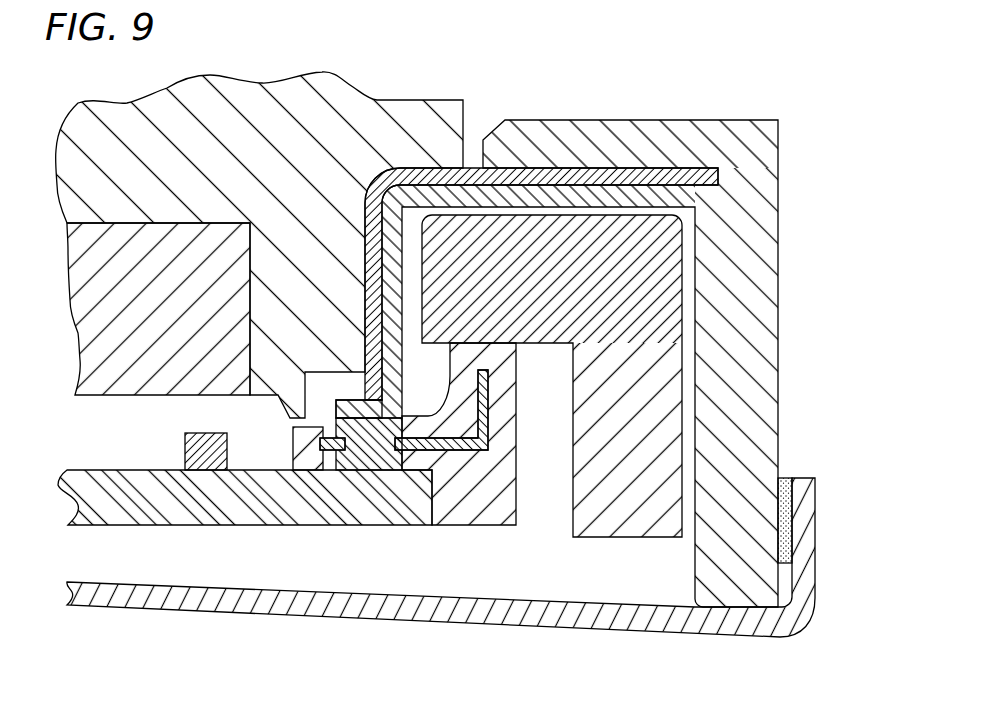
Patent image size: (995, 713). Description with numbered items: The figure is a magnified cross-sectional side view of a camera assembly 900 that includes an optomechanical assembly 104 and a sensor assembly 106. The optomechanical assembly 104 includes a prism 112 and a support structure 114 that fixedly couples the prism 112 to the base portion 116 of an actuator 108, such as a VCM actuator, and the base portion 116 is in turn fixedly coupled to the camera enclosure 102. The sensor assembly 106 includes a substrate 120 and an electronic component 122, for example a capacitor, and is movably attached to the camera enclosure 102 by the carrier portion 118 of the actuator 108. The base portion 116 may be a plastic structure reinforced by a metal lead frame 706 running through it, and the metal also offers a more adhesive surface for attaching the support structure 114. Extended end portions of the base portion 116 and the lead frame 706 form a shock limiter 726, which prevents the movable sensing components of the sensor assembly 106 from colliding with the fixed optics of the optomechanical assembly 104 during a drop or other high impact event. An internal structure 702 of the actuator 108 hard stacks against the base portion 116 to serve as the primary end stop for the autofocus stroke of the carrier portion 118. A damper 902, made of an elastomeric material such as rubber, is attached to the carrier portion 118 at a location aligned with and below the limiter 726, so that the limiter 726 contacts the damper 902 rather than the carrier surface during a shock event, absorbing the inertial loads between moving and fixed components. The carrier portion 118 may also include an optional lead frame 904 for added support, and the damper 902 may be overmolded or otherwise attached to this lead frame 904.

The camera enclosure 102 is at (323, 612).
The optomechanical assembly 104 is at (72, 332).
The sensor assembly 106 is at (120, 549).
The actuator 108 is at (785, 367).
The prism 112 is at (107, 370).
The support structure 114 is at (378, 98).
The base portion 116 is at (778, 234).
The carrier portion 118 is at (470, 525).
The substrate 120 is at (253, 508).
The electronic component 122 is at (185, 447).
The internal structure 702 is at (615, 537).
The lead frame 706 is at (614, 166).
The shock limiter 726 is at (357, 392).
The camera assembly 900 is at (793, 156).
The damper 902 is at (370, 452).
The lead frame 904 is at (465, 452).